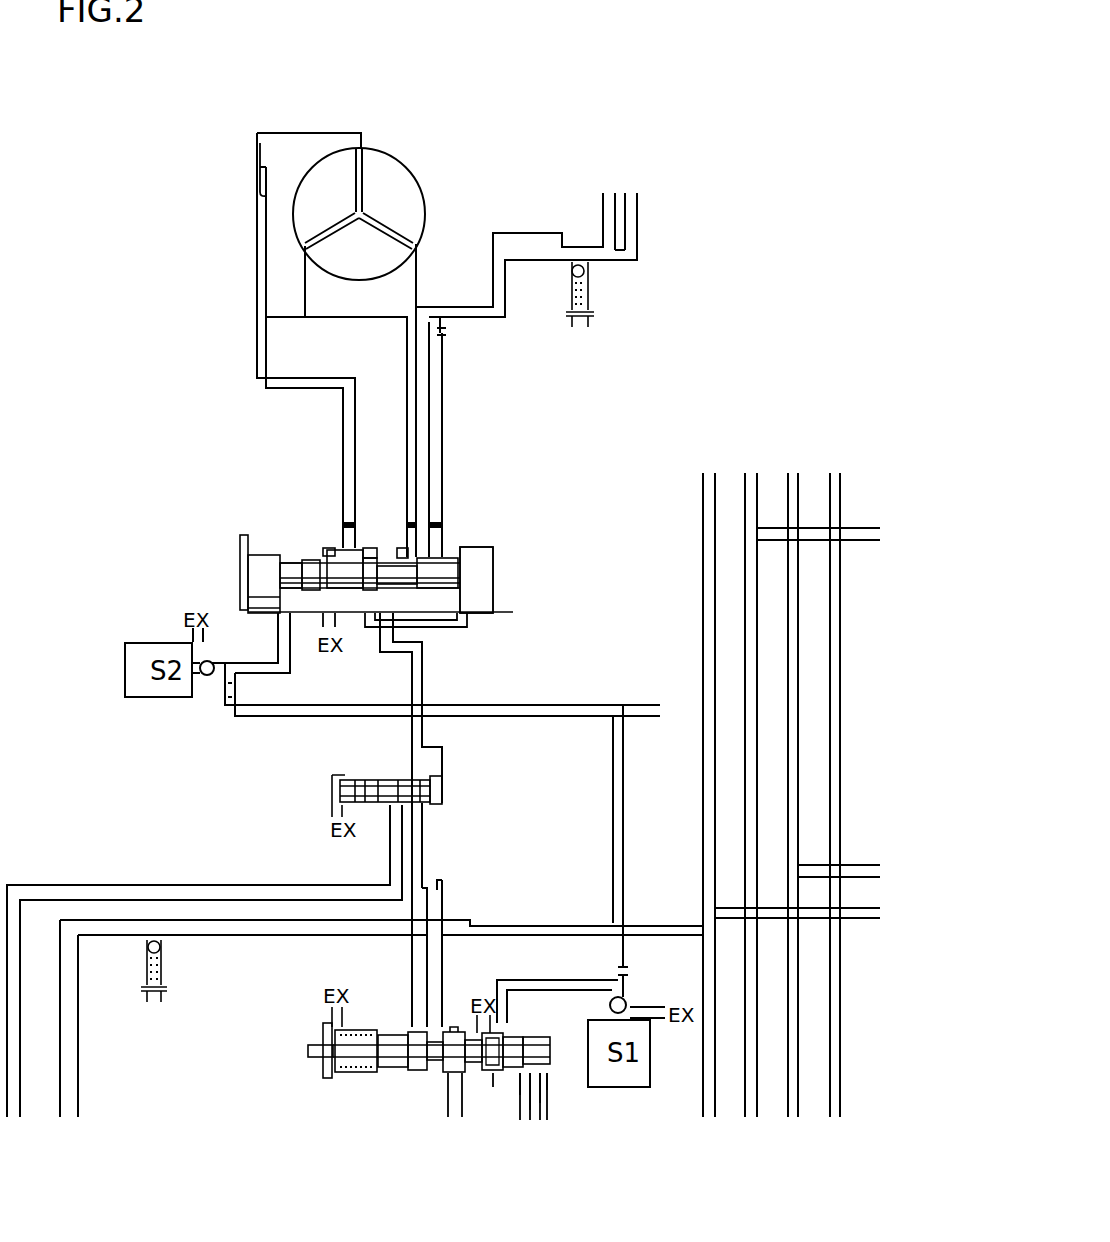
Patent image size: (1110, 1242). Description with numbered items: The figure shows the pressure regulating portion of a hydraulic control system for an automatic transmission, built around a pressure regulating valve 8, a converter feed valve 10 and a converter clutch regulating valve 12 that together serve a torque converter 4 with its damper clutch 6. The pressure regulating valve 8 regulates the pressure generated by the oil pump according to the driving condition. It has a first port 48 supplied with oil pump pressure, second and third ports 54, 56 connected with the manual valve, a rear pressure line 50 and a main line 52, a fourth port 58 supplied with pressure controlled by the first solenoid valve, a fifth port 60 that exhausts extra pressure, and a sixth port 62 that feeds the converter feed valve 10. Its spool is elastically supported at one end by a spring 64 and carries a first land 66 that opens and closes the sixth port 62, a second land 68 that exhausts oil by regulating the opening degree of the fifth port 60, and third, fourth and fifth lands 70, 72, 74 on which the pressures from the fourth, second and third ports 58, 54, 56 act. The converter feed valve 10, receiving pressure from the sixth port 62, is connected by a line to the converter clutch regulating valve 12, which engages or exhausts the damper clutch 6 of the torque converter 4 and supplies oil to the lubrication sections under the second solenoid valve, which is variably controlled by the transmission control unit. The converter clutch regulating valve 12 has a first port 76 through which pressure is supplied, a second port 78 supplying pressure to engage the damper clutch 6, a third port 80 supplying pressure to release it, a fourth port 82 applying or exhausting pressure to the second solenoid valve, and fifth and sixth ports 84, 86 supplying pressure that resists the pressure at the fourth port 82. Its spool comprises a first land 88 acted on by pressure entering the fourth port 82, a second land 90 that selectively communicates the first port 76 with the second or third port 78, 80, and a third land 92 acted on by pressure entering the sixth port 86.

The torque converter 4 is at (408, 138).
The damper clutch 6 is at (262, 190).
The pressure regulating valve 8 is at (300, 1050).
The converter feed valve 10 is at (322, 790).
The converter clutch regulating valve 12 is at (514, 578).
The first port 48 is at (435, 1027).
The rear pressure line 50 is at (525, 1110).
The main line 52 is at (547, 1103).
The second port 54 is at (523, 1070).
The third port 56 is at (550, 1073).
The fourth port 58 is at (503, 1023).
The fifth port 60 is at (457, 1080).
The sixth port 62 is at (418, 1023).
The spring 64 is at (362, 1071).
The first land 66 is at (418, 1071).
The second land 68 is at (443, 1073).
The third land 70 is at (493, 1063).
The fourth land 72 is at (512, 1040).
The fifth land 74 is at (538, 1045).
The first port 76 is at (387, 602).
The second port 78 is at (412, 557).
The third port 80 is at (348, 556).
The fourth port 82 is at (283, 602).
The fifth port 84 is at (355, 600).
The sixth port 86 is at (480, 600).
The first land 88 is at (292, 566).
The second land 90 is at (368, 566).
The third land 92 is at (442, 570).